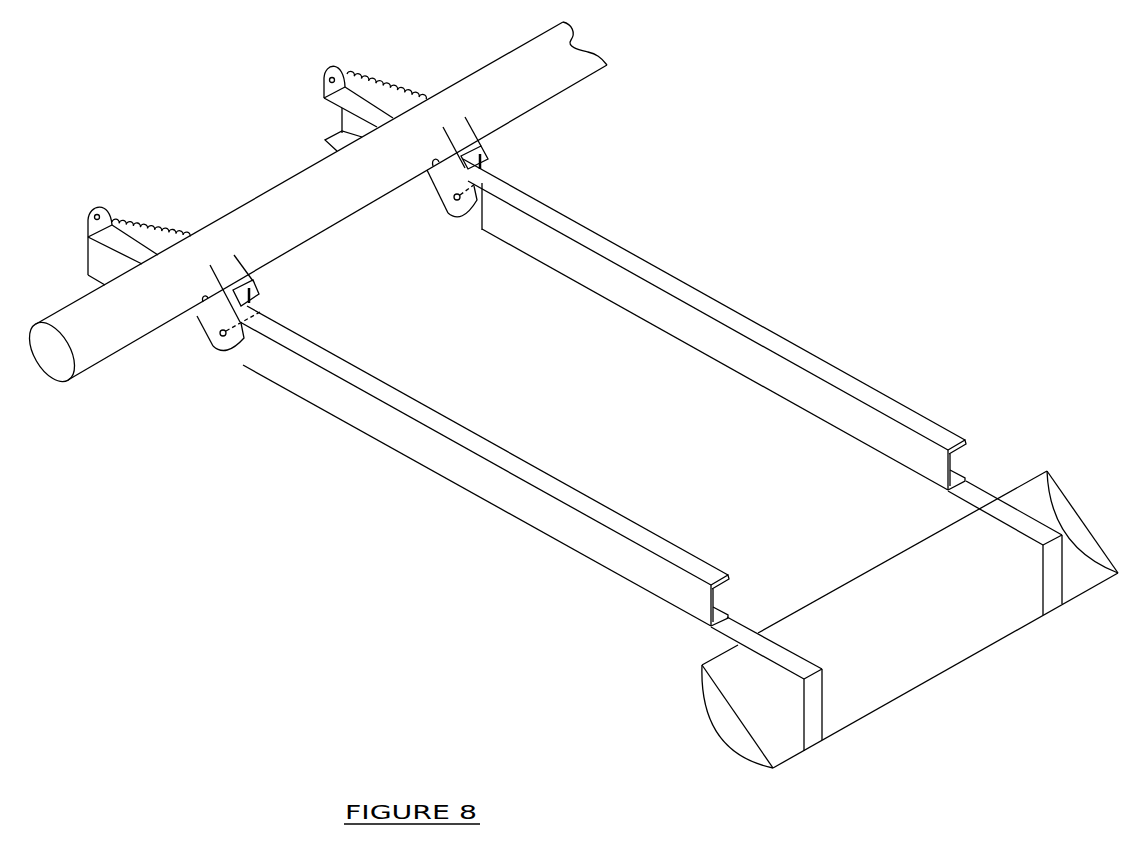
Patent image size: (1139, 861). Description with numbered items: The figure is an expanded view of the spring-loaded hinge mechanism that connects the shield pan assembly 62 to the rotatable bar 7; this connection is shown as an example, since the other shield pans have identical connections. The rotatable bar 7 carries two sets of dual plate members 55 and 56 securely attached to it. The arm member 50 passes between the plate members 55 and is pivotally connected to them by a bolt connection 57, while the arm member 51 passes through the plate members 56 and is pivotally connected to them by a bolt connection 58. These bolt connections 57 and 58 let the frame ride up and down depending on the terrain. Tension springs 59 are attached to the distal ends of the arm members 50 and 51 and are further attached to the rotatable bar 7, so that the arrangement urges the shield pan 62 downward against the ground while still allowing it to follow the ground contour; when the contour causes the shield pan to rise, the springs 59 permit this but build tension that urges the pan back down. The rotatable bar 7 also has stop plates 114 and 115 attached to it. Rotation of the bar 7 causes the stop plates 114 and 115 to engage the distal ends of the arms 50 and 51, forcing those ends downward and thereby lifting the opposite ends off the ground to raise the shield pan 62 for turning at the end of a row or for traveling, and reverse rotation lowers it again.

The rotatable bar 7 is at (289, 177).
The arm member 50 is at (532, 461).
The arm member 51 is at (868, 383).
The plate members 55 is at (259, 290).
The plate members 56 is at (494, 157).
The bolt connection 57 is at (229, 341).
The bolt connection 58 is at (456, 211).
The tension springs 59 is at (128, 217).
The shield pan assembly 62 is at (893, 552).
The stop plate 114 is at (254, 301).
The stop plate 115 is at (494, 165).